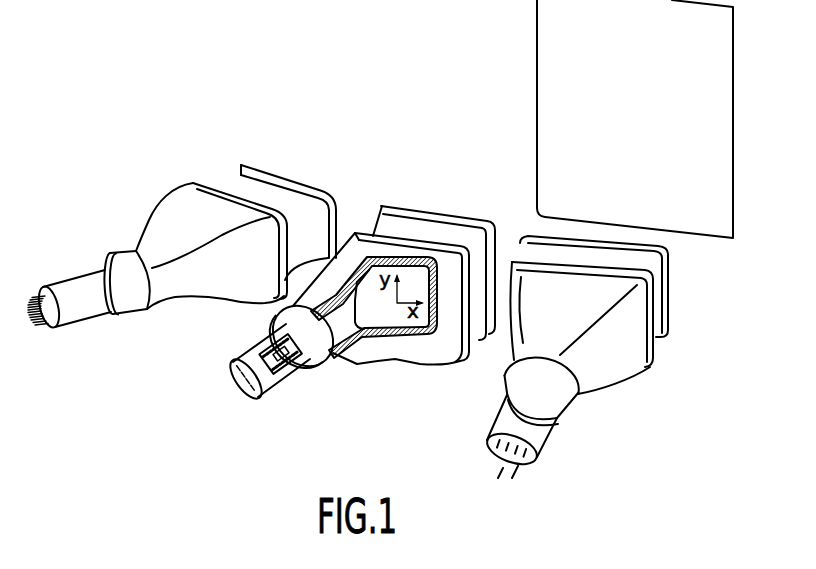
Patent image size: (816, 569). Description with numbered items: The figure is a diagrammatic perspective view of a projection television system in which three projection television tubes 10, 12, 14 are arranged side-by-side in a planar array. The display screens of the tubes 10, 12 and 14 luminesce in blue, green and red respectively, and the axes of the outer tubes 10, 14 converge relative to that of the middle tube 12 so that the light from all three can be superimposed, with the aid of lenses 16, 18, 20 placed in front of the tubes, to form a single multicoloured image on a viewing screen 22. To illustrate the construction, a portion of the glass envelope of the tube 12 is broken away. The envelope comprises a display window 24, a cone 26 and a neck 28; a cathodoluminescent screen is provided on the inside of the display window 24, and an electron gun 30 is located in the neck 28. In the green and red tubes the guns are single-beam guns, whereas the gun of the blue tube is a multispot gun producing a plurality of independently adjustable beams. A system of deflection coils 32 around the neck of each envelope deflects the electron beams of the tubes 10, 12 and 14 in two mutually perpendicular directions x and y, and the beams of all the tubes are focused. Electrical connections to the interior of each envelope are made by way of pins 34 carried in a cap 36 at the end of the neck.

The projection television tube 10 is at (160, 196).
The projection television tube 12 is at (357, 366).
The projection television tube 14 is at (613, 380).
The lens 16 is at (228, 179).
The lens 18 is at (396, 222).
The lens 20 is at (657, 261).
The viewing screen 22 is at (553, 85).
The display window 24 is at (358, 231).
The cone 26 is at (430, 355).
The neck 28 is at (277, 388).
The electron gun 30 is at (263, 337).
The deflection coils 32 is at (112, 252).
The pins 34 is at (238, 387).
The cap 36 is at (237, 372).